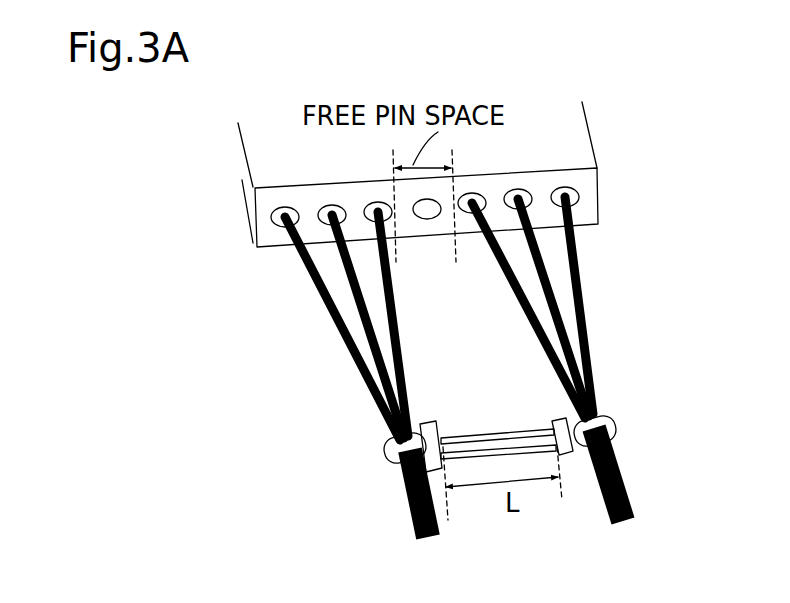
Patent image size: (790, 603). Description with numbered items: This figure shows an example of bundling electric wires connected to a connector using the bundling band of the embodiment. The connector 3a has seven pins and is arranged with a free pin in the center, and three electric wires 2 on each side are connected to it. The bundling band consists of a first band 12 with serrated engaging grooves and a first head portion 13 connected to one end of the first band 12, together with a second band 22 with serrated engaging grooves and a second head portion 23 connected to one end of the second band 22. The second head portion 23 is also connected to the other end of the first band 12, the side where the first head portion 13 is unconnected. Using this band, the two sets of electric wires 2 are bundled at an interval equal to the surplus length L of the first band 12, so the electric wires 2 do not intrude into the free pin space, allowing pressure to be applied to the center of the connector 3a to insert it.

The connector 3a is at (578, 147).
The electric wires 2 is at (415, 498).
The first band 12 is at (388, 446).
The second band 22 is at (600, 418).
The first head portion 13 is at (428, 424).
The second head portion 23 is at (555, 427).